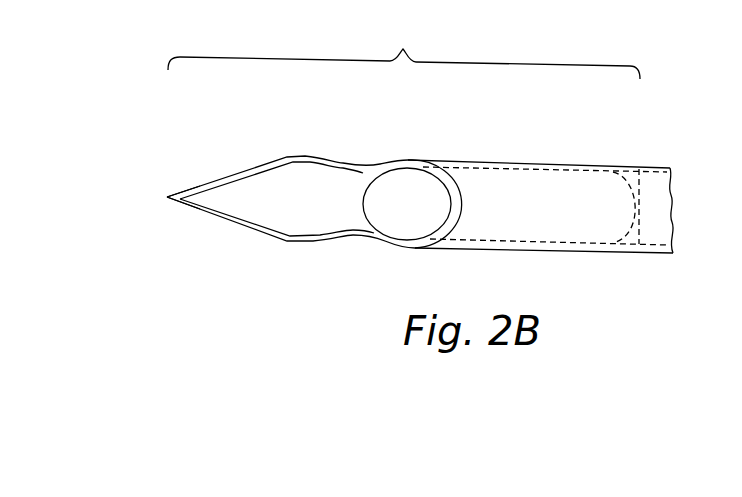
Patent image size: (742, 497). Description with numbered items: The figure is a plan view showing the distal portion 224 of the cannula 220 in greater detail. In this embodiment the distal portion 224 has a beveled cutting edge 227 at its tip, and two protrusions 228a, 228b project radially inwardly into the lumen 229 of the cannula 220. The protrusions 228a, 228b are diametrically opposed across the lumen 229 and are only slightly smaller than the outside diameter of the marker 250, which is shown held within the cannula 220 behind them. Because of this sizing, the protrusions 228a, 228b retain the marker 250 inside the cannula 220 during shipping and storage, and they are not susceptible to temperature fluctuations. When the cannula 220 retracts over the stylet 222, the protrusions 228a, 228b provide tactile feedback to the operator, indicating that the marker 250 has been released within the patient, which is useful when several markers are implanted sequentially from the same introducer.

The cannula 220 is at (643, 165).
The stylet 222 is at (623, 247).
The distal portion 224 is at (403, 50).
The beveled cutting edge 227 is at (208, 213).
The protrusion 228a is at (343, 163).
The protrusion 228b is at (343, 243).
The lumen 229 is at (355, 180).
The marker 250 is at (513, 193).